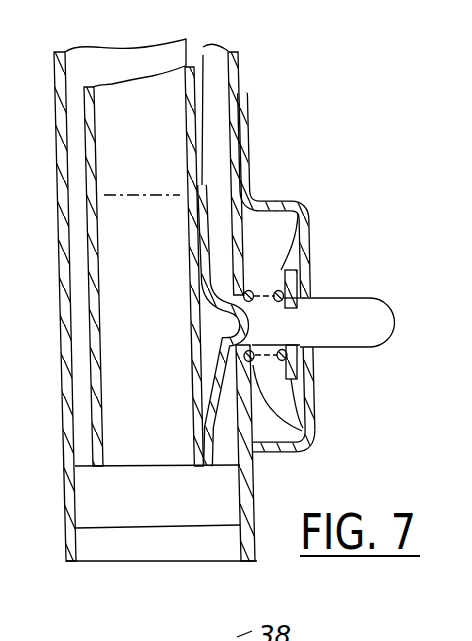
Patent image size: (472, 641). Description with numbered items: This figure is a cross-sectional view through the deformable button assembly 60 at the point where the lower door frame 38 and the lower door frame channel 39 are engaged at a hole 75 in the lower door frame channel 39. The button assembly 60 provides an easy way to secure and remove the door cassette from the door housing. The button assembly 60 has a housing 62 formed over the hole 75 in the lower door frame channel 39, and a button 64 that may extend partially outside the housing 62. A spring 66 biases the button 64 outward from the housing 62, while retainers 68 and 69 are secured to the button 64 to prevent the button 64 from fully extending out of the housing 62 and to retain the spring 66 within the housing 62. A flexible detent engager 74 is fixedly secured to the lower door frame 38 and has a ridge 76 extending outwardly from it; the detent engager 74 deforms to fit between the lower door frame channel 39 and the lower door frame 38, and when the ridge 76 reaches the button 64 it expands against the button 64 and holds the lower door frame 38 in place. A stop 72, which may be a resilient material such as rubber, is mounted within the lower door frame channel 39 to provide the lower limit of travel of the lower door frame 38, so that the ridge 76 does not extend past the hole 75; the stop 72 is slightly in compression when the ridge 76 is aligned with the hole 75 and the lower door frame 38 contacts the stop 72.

The lower door frame 38 is at (186, 38).
The lower door frame channel 39 is at (237, 51).
The deformable button assembly 60 is at (276, 173).
The housing 62 is at (293, 204).
The button 64 is at (366, 300).
The spring 66 is at (287, 270).
The retainer 68 is at (313, 378).
The retainer 69 is at (315, 409).
The stop 72 is at (103, 498).
The flexible detent engager 74 is at (203, 55).
The hole 75 is at (258, 487).
The ridge 76 is at (313, 435).